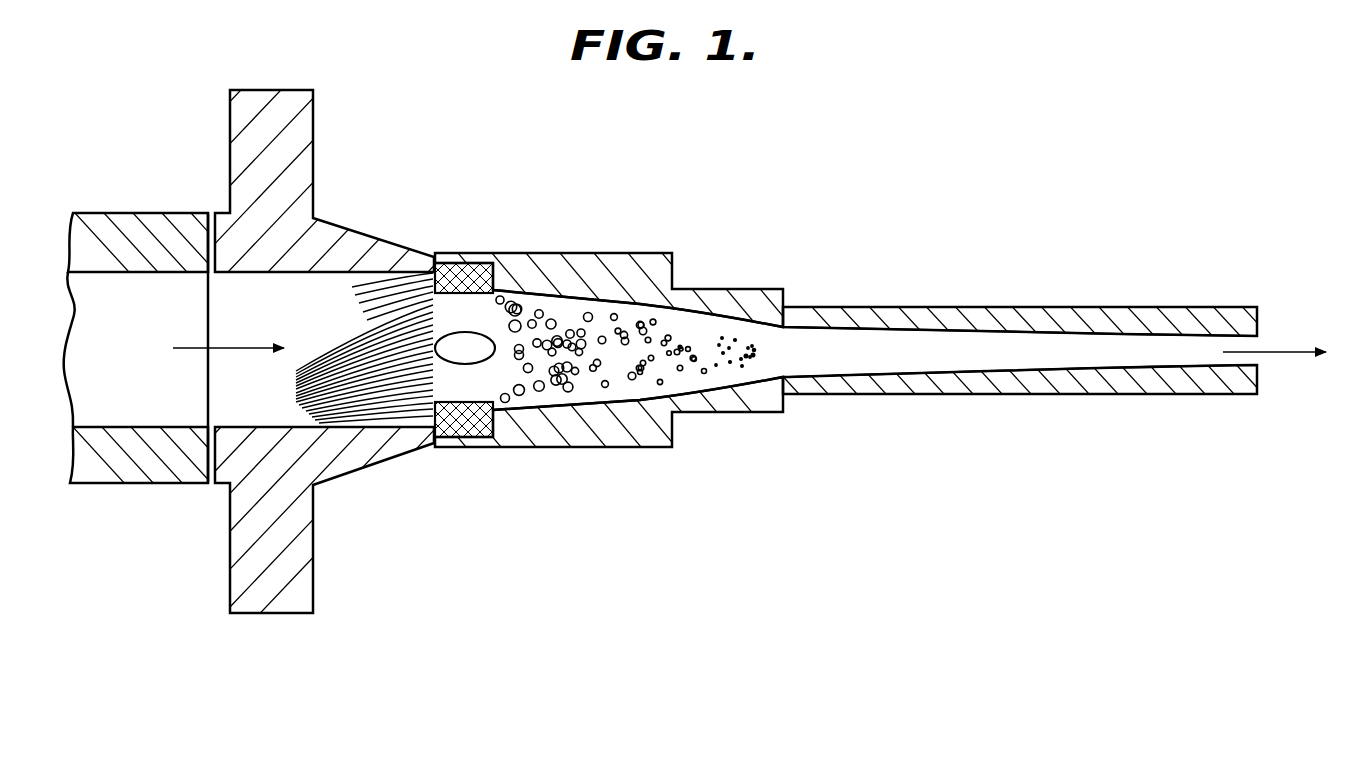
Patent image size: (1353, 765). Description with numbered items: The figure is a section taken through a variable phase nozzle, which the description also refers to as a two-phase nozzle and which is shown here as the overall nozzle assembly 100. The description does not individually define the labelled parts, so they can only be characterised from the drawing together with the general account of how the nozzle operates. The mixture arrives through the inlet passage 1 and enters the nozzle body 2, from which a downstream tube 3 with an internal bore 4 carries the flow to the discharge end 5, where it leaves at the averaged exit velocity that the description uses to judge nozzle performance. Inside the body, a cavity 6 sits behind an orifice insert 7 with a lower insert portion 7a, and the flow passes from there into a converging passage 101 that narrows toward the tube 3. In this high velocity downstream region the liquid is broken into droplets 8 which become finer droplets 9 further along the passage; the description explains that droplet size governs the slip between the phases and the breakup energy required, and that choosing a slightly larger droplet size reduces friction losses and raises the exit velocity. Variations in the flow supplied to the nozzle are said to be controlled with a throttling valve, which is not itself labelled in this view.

The inlet pipe 1 is at (192, 350).
The nozzle body 2 is at (617, 302).
The capillary tube 3 is at (958, 330).
The tube bore 4 is at (1137, 335).
The outlet flow 5 is at (1292, 352).
The cavity 6 is at (463, 345).
The orifice insert 7 is at (500, 272).
The orifice insert lower part 7a is at (467, 422).
The droplets 8 is at (563, 358).
The fine droplets 9 is at (747, 352).
The atomizing device 100 is at (818, 217).
The convergent channel 101 is at (523, 410).